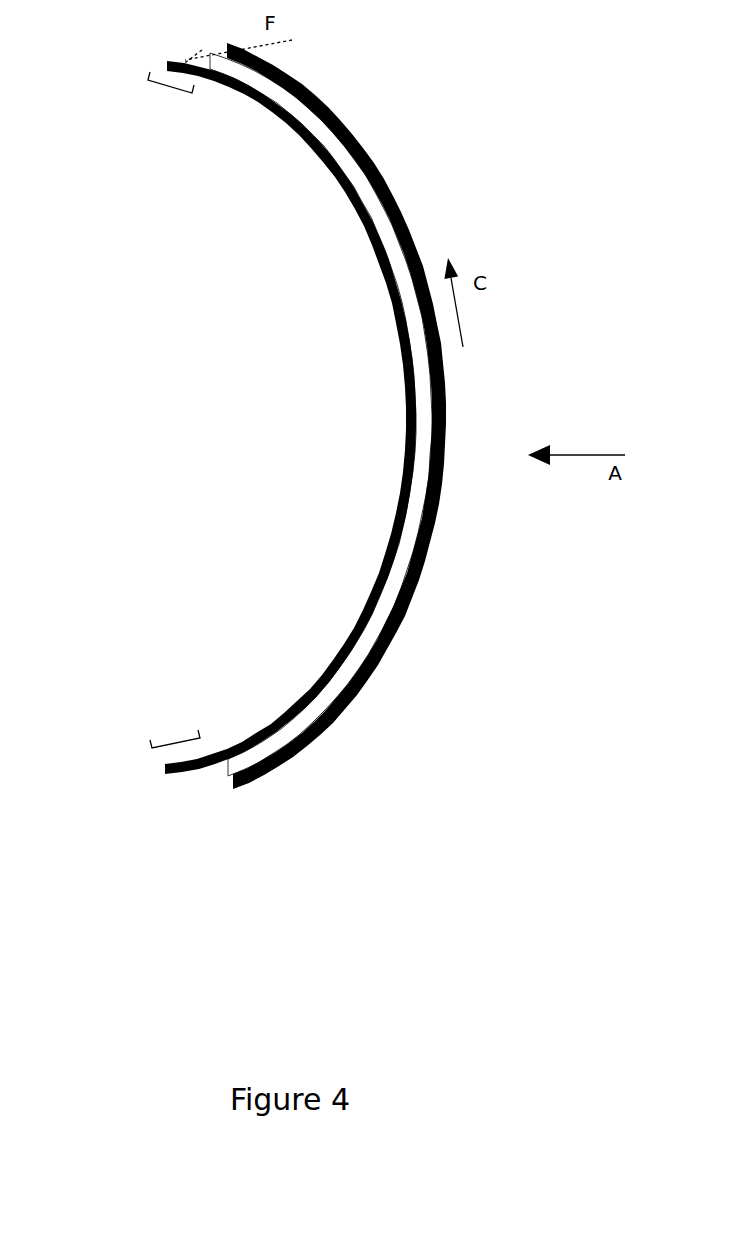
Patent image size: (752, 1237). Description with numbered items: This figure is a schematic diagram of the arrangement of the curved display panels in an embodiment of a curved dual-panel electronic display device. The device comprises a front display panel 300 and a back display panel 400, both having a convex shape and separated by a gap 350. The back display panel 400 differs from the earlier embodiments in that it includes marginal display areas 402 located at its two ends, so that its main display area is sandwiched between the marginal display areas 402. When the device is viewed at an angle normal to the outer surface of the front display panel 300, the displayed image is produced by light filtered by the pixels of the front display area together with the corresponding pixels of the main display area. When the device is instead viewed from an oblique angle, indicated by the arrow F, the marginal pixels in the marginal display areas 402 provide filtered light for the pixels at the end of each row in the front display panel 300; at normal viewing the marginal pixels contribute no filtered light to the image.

The back display panel 400 is at (165, 770).
The gap 350 is at (227, 767).
The front display panel 300 is at (238, 780).
The marginal display areas 402 is at (167, 86).